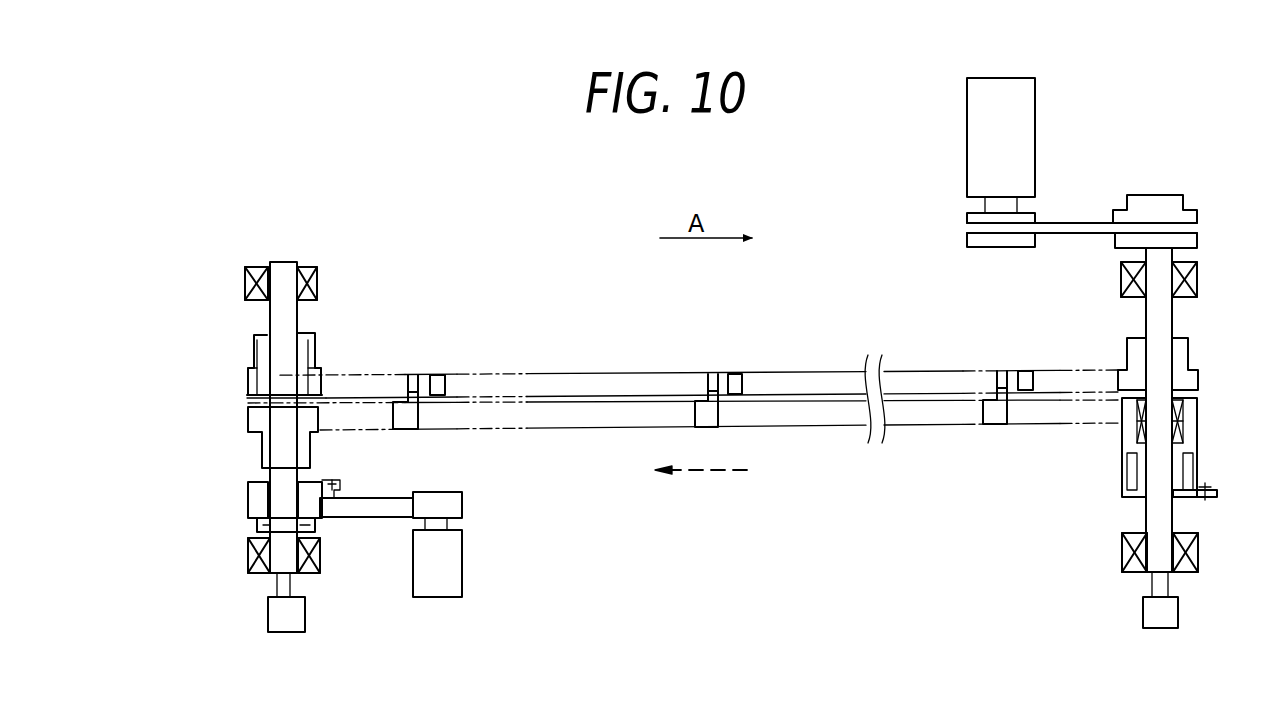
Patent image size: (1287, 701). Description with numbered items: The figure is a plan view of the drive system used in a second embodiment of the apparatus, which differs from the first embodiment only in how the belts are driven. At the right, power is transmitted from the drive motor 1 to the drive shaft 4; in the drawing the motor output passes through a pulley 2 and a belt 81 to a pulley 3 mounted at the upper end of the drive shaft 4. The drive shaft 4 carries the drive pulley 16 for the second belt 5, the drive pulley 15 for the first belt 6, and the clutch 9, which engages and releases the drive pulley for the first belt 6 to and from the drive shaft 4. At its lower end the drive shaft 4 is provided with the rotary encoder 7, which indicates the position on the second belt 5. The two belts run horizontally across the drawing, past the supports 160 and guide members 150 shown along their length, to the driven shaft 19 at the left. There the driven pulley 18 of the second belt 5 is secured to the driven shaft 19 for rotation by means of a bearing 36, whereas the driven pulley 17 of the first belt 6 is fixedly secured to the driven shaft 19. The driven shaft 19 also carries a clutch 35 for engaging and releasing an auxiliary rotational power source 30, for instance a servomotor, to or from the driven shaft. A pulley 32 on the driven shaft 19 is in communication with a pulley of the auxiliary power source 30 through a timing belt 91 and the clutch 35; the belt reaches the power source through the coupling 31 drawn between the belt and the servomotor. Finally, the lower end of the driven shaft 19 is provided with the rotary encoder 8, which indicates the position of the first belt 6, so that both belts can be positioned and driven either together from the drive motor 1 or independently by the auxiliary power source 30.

The drive motor 1 is at (1020, 118).
The drive pulley 2 is at (1030, 216).
The driven pulley 3 is at (1172, 200).
The belt 81 is at (1075, 232).
The drive shaft 4 is at (1158, 314).
The drive pulley 16 is at (1177, 350).
The drive pulley 15 is at (1188, 415).
The clutch 9 is at (1188, 472).
The rotary encoder 7 is at (1165, 610).
The driven shaft 19 is at (283, 270).
The driven pulley 18 is at (250, 386).
The bearing 36 is at (303, 348).
The driven pulley 17 is at (256, 418).
The clutch 35 is at (243, 494).
The pulley 32 is at (320, 522).
The rotary encoder 8 is at (278, 612).
The timing belt 91 is at (392, 508).
The coupling 31 is at (445, 504).
The auxiliary rotational power source 30 is at (450, 572).
The support member 160 is at (413, 376).
The guide member 150 is at (437, 380).
The second belt 5 is at (553, 378).
The first belt 6 is at (588, 415).